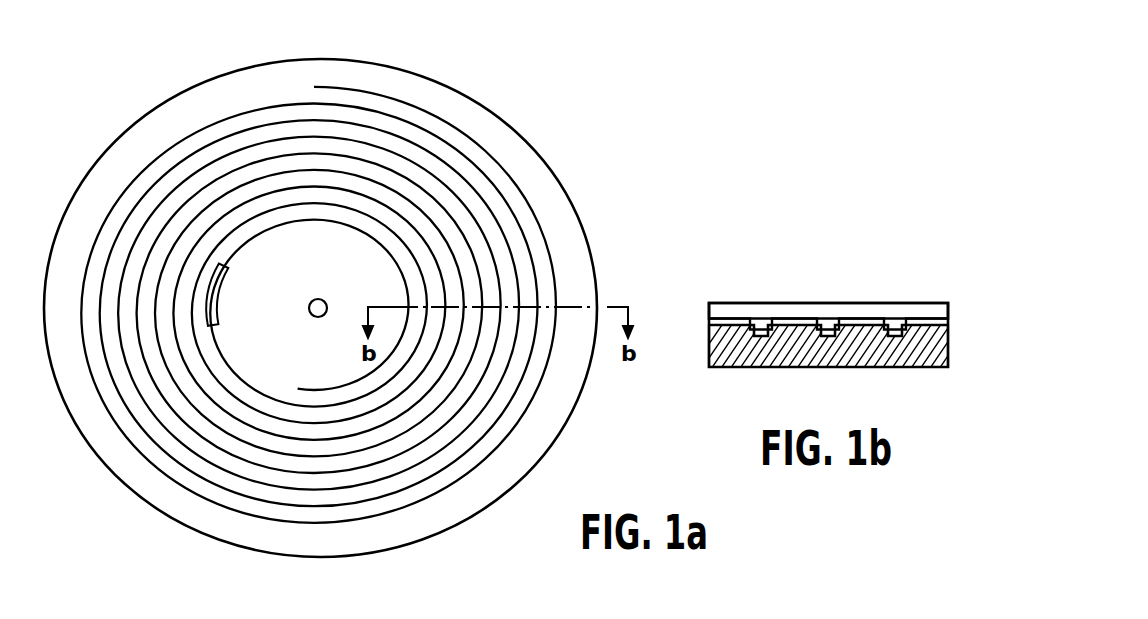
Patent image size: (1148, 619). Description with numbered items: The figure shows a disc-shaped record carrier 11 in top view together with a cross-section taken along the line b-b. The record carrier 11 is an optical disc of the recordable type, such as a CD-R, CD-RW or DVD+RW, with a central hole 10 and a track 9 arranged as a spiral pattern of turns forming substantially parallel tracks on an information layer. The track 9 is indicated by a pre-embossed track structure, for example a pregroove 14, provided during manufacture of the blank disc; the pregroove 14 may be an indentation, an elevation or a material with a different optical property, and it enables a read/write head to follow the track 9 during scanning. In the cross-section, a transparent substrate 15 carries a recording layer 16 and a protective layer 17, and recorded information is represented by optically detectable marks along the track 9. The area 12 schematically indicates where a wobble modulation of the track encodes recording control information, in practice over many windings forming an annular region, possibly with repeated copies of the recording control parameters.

In FIG. 1a, the track 9 is at (167, 145).
In FIG. 1a, the central hole 10 is at (318, 299).
In FIG. 1a, the record carrier 11 is at (570, 146).
In FIG. 1b, the record carrier 11 is at (713, 277).
In FIG. 1a, the area 12 is at (218, 307).
In FIG. 1b, the pregroove 14 is at (830, 336).
In FIG. 1b, the transparent substrate 15 is at (733, 362).
In FIG. 1b, the recording layer 16 is at (915, 317).
In FIG. 1b, the protective layer 17 is at (822, 307).